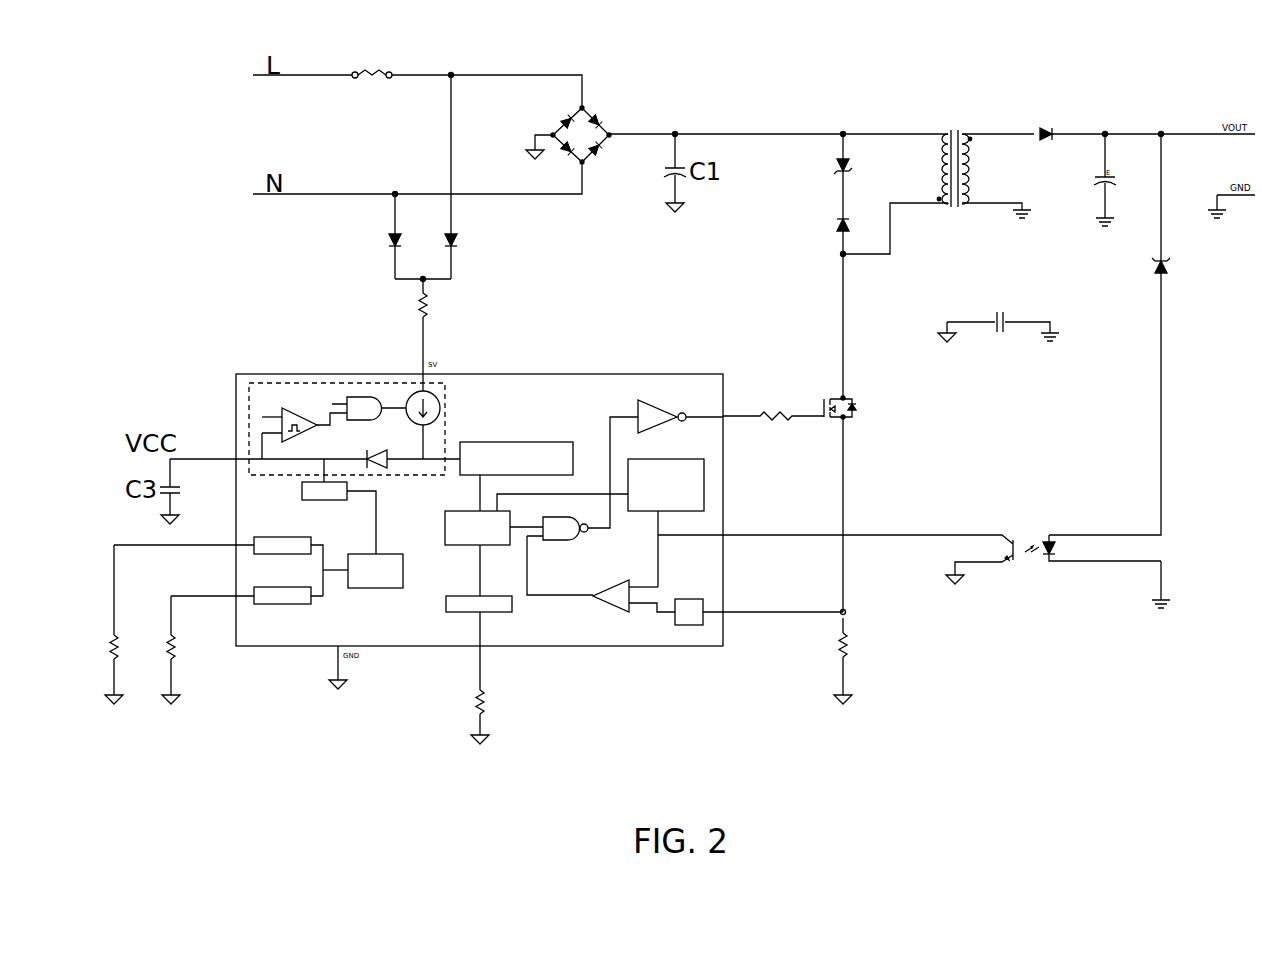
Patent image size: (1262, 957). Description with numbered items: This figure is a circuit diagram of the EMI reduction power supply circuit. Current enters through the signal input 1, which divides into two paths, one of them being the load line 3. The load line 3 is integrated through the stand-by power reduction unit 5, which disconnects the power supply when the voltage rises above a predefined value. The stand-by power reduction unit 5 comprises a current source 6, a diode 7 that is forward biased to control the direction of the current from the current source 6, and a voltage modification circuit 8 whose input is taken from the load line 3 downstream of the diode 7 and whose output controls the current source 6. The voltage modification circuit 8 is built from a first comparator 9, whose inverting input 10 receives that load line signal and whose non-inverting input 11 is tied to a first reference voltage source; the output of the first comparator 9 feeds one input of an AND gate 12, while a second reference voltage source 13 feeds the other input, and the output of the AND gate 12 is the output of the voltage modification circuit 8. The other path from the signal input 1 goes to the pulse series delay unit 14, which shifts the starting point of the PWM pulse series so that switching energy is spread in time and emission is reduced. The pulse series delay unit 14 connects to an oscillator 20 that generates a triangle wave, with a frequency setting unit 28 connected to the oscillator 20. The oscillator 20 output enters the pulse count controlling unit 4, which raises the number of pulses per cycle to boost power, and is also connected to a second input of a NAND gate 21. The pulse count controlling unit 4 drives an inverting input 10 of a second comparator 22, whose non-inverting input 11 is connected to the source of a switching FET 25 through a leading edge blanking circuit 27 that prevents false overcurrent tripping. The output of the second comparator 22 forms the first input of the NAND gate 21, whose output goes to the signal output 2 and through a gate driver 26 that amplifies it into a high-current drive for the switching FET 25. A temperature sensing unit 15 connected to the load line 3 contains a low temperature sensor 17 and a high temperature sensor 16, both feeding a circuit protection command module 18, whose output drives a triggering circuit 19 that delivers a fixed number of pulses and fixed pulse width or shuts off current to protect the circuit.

The signal input 1 is at (425, 350).
The signal output 2 is at (742, 413).
The load line 3 is at (280, 467).
The pulse count controlling unit 4 is at (704, 493).
The stand-by power reduction unit 5 is at (190, 410).
The current source 6 is at (440, 401).
The diode 7 is at (385, 463).
The voltage modification circuit 8 is at (347, 399).
The first comparator 9 is at (280, 406).
The inverting input 10 is at (262, 434).
The non-inverting input 11 is at (264, 414).
The AND gate 12 is at (380, 396).
The second reference voltage source 13 is at (332, 403).
The pulse series delay unit 14 is at (510, 437).
The temperature sensing unit 15 is at (278, 692).
The high temperature sensor 16 is at (268, 604).
The low temperature sensor 17 is at (260, 555).
The circuit protection command module 18 is at (372, 589).
The triggering circuit 19 is at (323, 500).
The oscillator 20 is at (445, 527).
The NAND gate 21 is at (565, 540).
The second comparator 22 is at (622, 613).
The switching field-effect transistor 25 is at (855, 412).
The gate driver 26 is at (655, 398).
The leading edge blanking circuit 27 is at (703, 620).
The frequency setting unit 28 is at (512, 606).